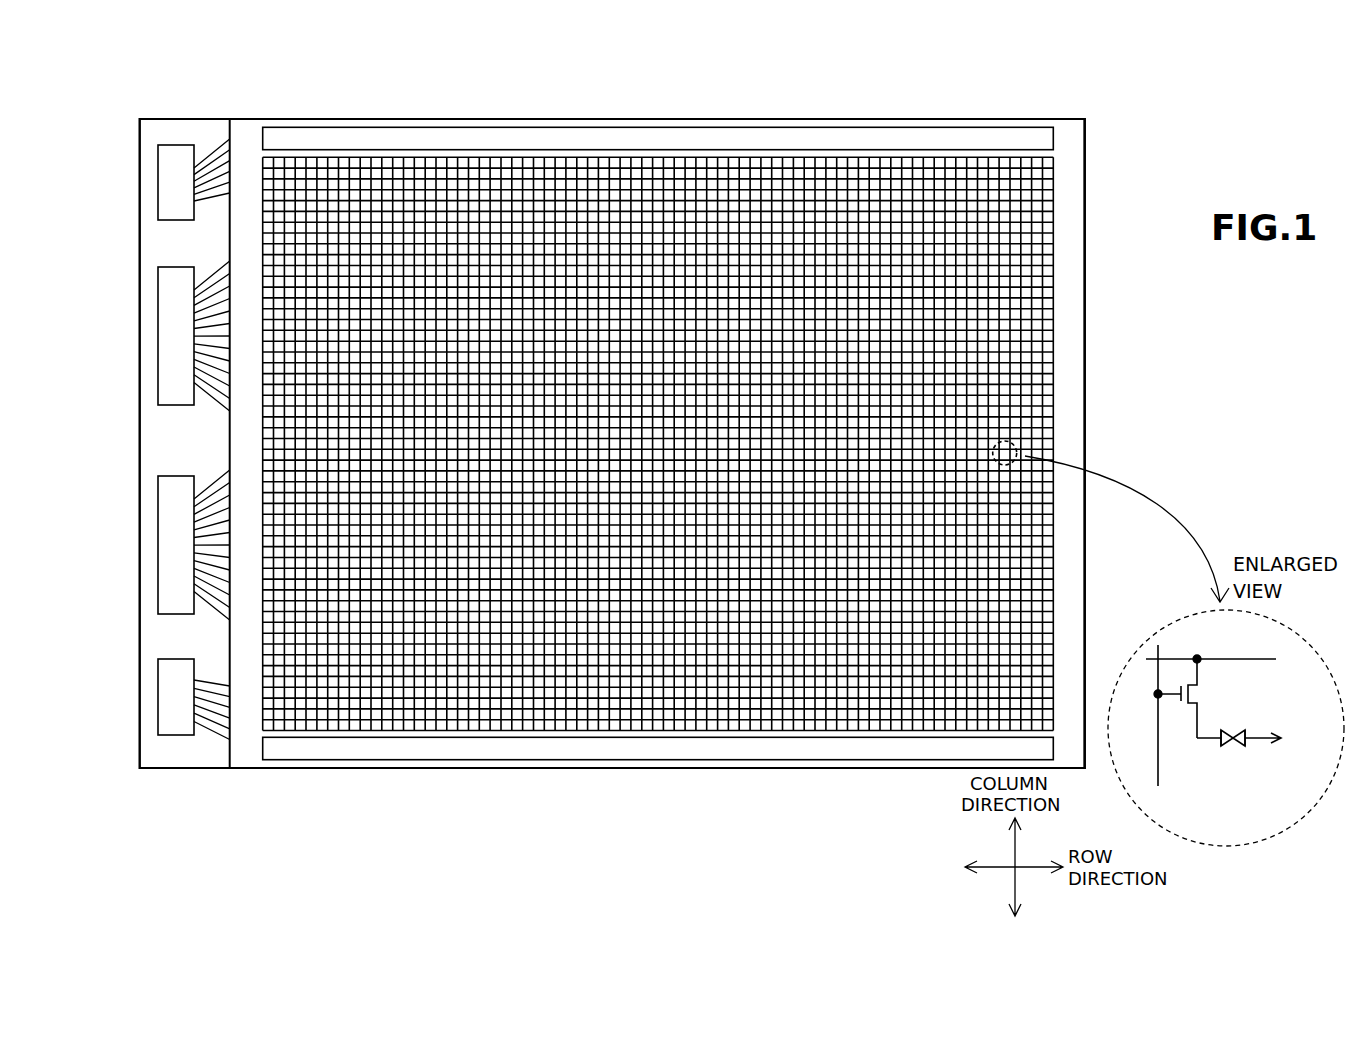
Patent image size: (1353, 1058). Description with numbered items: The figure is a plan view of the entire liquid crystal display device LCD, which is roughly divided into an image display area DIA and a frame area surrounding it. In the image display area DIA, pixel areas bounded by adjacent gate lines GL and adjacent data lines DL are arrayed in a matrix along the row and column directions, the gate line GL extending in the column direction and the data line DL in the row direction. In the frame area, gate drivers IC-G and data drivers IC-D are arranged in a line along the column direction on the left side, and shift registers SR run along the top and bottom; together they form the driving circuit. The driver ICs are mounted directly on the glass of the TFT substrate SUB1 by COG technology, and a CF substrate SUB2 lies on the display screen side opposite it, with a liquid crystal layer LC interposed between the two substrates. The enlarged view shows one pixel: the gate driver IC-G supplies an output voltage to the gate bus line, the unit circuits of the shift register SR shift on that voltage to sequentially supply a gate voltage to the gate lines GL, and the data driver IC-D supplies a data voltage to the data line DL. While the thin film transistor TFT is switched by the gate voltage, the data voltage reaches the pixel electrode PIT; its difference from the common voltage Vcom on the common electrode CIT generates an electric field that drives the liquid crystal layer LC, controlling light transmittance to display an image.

The liquid crystal display device LCD is at (1190, 88).
The TFT substrate SUB1 is at (180, 753).
The CF substrate SUB2 is at (1065, 150).
The shift register SR is at (648, 119).
The image display area DIA is at (1047, 264).
The gate driver IC-G is at (150, 175).
The data driver IC-D is at (150, 323).
The gate line GL is at (1161, 731).
The data line DL is at (1228, 662).
The thin film transistor TFT is at (1198, 698).
The liquid crystal layer LC is at (1221, 724).
The common voltage Vcom is at (1284, 727).
The pixel electrode PIT is at (1208, 736).
The common electrode CIT is at (1242, 736).